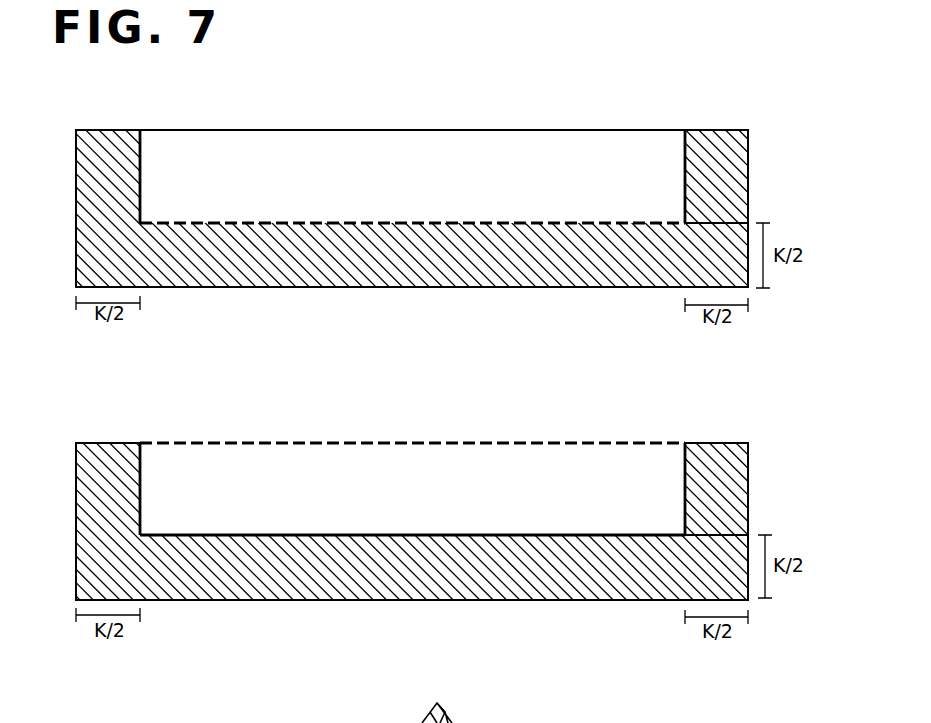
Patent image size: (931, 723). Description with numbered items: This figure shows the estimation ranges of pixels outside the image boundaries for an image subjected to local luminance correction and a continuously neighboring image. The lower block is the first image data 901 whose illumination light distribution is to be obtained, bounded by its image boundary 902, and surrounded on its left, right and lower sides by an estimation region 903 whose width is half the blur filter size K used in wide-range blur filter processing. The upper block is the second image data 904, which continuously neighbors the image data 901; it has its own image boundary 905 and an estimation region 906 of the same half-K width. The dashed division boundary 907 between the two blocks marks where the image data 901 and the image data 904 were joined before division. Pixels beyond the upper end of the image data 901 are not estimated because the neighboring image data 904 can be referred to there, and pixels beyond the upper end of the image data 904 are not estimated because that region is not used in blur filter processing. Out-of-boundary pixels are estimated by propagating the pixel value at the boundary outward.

The image data 901 is at (332, 500).
The image boundary 902 is at (547, 537).
The estimation region 903 is at (712, 465).
The image data 904 is at (346, 153).
The image boundary 905 is at (593, 130).
The estimation region 906 is at (712, 157).
The division boundary 907 is at (447, 223).